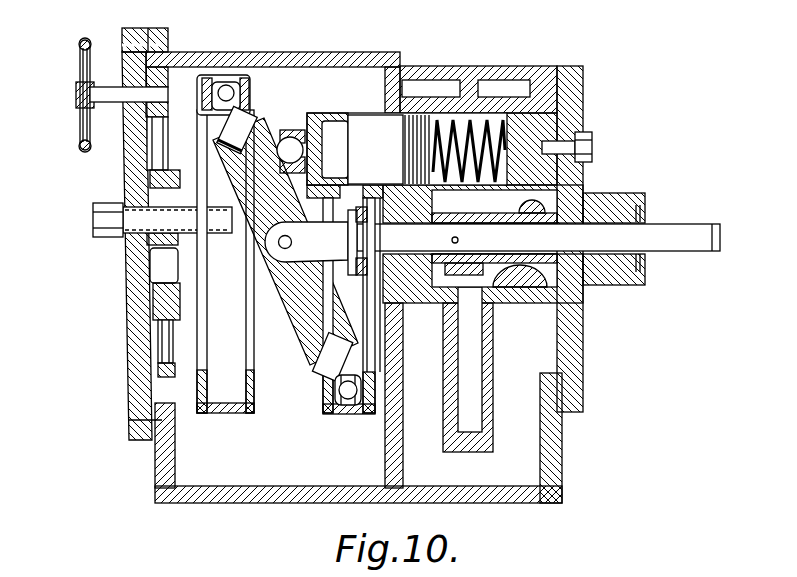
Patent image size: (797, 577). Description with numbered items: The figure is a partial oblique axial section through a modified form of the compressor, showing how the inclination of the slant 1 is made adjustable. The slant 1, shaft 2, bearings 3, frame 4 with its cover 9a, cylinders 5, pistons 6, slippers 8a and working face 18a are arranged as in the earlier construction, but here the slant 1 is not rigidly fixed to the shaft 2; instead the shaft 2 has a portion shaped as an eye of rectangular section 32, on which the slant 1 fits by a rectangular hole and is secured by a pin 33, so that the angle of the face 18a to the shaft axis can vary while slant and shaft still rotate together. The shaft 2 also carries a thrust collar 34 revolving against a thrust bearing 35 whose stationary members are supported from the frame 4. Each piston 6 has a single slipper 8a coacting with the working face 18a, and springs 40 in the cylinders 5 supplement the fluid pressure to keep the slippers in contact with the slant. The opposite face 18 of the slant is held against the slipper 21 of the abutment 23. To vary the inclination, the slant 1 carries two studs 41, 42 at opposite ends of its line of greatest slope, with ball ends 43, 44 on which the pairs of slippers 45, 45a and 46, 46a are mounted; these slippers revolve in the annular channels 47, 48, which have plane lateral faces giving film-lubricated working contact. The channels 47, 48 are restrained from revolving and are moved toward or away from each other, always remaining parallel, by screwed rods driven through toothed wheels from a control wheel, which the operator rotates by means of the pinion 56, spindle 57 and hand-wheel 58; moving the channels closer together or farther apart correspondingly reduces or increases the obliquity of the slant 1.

The slant 1 is at (298, 303).
The shaft 2 is at (494, 238).
The bearings 3 is at (420, 223).
The frame 4 is at (432, 68).
The cylinders 5 is at (470, 115).
The pistons 6 is at (407, 149).
The slipper 8a is at (272, 140).
The adjusting screw 9a is at (548, 133).
The opposite face 18 is at (297, 328).
The working face 18a is at (285, 190).
The slipper 21 is at (242, 237).
The abutment 23 is at (222, 213).
The eye of rectangular section 32 is at (285, 262).
The pin 33 is at (290, 242).
The thrust collar 34 is at (355, 213).
The thrust bearing 35 is at (355, 266).
The springs 40 is at (450, 147).
The stud 41 is at (240, 135).
The stud 42 is at (316, 350).
The ball end 43 is at (280, 54).
The ball end 44 is at (340, 405).
The slipper 45 is at (203, 100).
The slipper 45a is at (250, 94).
The slipper 46 is at (324, 392).
The slipper 46a is at (372, 389).
The annular channel 47 is at (226, 91).
The annular channel 48 is at (366, 413).
The pinion 56 is at (172, 67).
The spindle 57 is at (108, 100).
The hand-wheel 58 is at (78, 42).